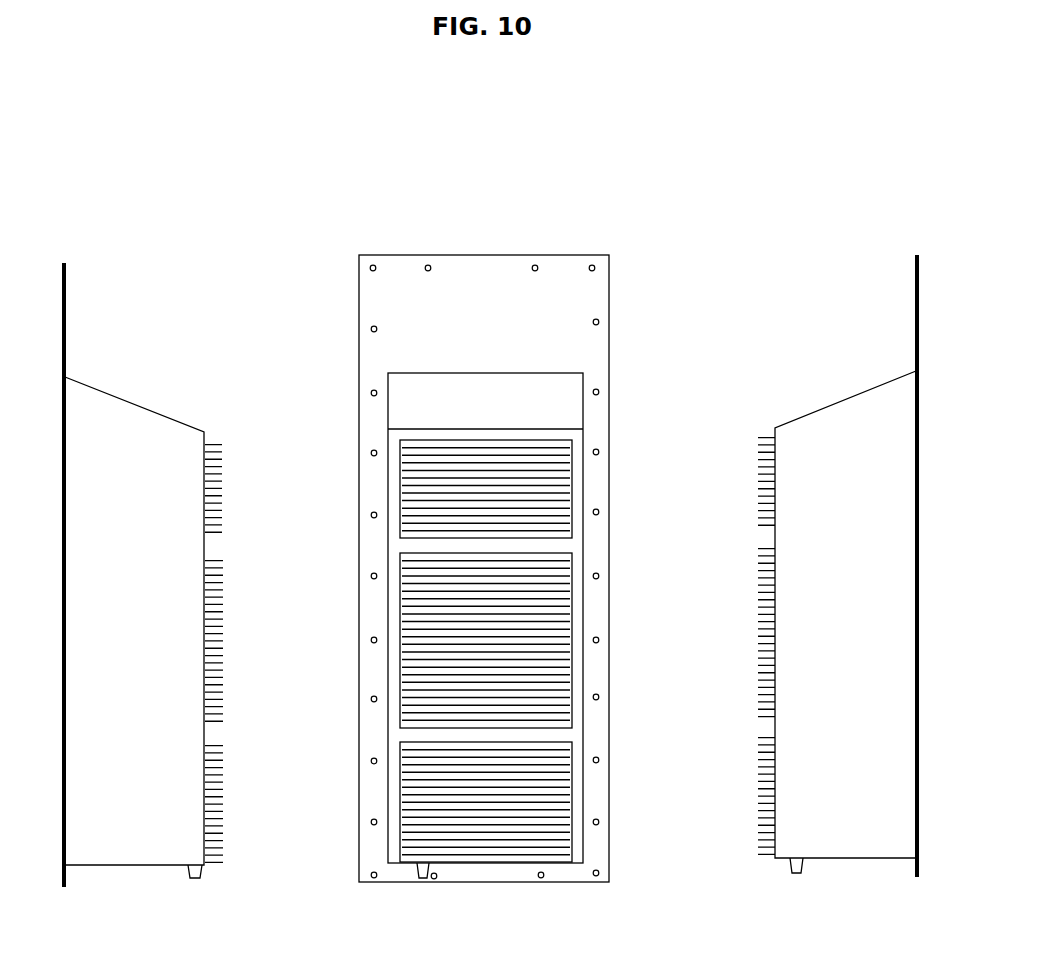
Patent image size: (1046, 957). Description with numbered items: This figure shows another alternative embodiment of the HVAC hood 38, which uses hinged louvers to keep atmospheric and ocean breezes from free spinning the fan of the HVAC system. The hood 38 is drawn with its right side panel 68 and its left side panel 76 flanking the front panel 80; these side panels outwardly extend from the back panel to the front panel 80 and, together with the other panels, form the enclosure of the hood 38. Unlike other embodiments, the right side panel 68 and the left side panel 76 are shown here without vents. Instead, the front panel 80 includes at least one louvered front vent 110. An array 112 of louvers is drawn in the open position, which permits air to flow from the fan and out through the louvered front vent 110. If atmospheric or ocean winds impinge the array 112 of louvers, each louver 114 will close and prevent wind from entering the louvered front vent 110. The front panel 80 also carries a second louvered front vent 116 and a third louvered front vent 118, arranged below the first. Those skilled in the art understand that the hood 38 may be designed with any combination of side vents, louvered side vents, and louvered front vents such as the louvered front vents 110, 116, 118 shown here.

The hood 38 is at (150, 132).
The right side panel 68 is at (134, 482).
The left side panel 76 is at (848, 465).
The front panel 80 is at (573, 432).
The louvered front vent 110 is at (418, 571).
The array of louvers 112 is at (233, 558).
The louver 114 is at (218, 553).
The second louvered front vent 116 is at (541, 493).
The third louvered front vent 118 is at (548, 782).